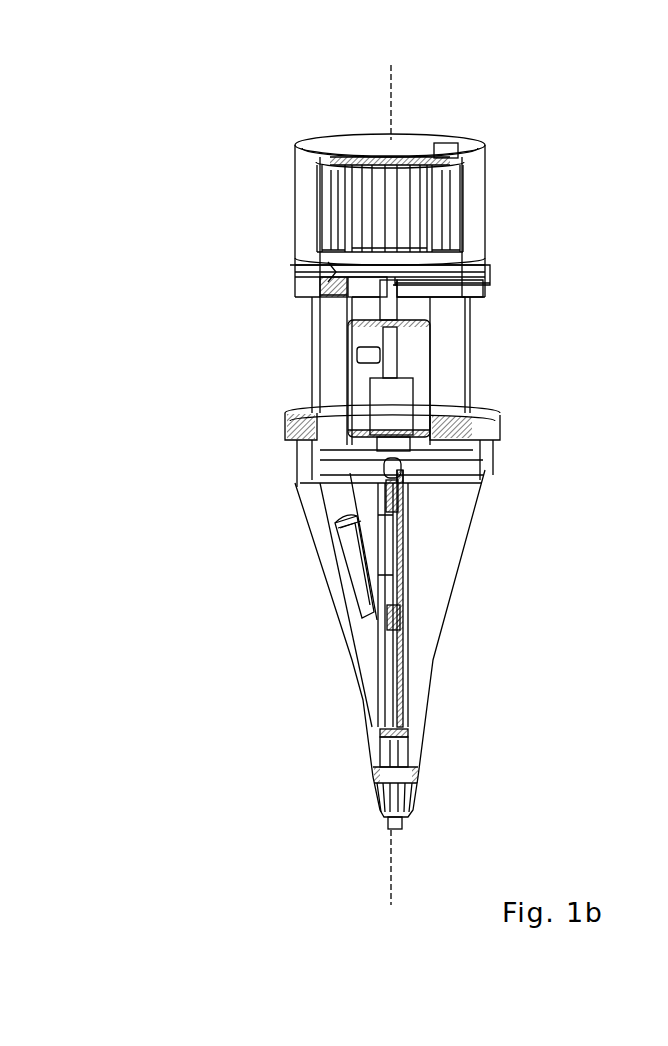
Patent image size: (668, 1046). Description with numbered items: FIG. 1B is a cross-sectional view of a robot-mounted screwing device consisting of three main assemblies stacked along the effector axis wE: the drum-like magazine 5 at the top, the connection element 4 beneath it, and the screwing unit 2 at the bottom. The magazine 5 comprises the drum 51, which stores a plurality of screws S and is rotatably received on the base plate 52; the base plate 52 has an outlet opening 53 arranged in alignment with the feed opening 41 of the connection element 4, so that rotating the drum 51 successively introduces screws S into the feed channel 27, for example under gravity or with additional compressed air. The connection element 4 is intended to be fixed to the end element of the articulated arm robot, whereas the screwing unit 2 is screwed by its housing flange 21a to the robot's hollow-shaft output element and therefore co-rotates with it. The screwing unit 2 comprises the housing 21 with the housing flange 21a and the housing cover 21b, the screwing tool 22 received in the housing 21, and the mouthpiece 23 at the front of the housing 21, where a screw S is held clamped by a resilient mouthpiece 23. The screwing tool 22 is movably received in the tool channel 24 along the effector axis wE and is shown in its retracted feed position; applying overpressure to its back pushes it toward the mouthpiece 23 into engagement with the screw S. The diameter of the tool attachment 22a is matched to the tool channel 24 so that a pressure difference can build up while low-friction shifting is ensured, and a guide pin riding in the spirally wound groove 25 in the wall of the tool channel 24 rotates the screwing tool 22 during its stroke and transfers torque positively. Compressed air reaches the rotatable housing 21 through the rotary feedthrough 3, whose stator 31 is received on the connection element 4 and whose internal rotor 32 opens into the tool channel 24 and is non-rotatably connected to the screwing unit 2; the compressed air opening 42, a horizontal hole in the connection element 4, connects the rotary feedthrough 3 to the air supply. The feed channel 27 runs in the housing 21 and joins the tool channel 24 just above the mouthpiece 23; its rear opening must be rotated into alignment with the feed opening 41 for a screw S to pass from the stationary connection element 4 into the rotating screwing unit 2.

The screwing unit 2 is at (397, 589).
The rotary feedthrough 3 is at (465, 379).
The connection element 4 is at (490, 266).
The magazine 5 is at (310, 202).
The housing 21 is at (315, 583).
The housing flange 21a is at (283, 423).
The housing cover 21b is at (305, 470).
The screwing tool 22 is at (491, 579).
The tool attachment 22a is at (403, 503).
The mouthpiece 23 is at (371, 780).
The tool channel 24 is at (402, 644).
The spirally wound groove 25 is at (405, 538).
The feed channel 27 is at (368, 637).
The stator 31 is at (417, 360).
The rotor 32 is at (398, 408).
The feed opening 41 is at (296, 284).
The compressed air opening 42 is at (490, 283).
The drum 51 is at (291, 169).
The base plate 52 is at (295, 262).
The outlet opening 53 is at (296, 271).
The screw S is at (393, 203).
The effector axis wE is at (392, 878).